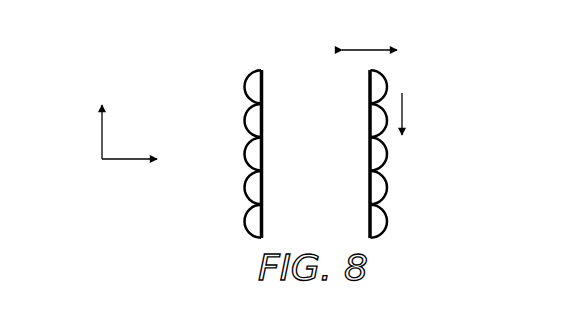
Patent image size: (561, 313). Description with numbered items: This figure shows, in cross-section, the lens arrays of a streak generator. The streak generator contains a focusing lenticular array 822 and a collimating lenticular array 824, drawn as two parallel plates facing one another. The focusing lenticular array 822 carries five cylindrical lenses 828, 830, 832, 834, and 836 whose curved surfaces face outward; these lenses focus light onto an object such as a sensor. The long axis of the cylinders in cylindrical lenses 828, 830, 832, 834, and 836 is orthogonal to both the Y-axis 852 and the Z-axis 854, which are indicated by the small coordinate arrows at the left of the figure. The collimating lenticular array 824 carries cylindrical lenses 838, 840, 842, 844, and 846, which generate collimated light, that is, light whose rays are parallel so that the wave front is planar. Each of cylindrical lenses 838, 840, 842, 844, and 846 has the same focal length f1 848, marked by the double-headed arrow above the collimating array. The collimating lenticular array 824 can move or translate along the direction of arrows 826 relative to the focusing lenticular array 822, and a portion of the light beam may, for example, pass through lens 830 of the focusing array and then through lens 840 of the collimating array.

The focusing lenticular array 822 is at (266, 115).
The collimating lenticular array 824 is at (366, 180).
The arrows 826 is at (402, 112).
The cylindrical lens 828 is at (244, 80).
The cylindrical lens 830 is at (244, 117).
The cylindrical lens 832 is at (244, 148).
The cylindrical lens 834 is at (244, 190).
The cylindrical lens 836 is at (243, 222).
The cylindrical lens 838 is at (387, 82).
The cylindrical lens 840 is at (369, 130).
The cylindrical lens 842 is at (387, 165).
The cylindrical lens 844 is at (387, 193).
The cylindrical lens 846 is at (387, 227).
The focal length f1 848 is at (364, 51).
The Y-axis 852 is at (101, 136).
The Z-axis 854 is at (123, 160).